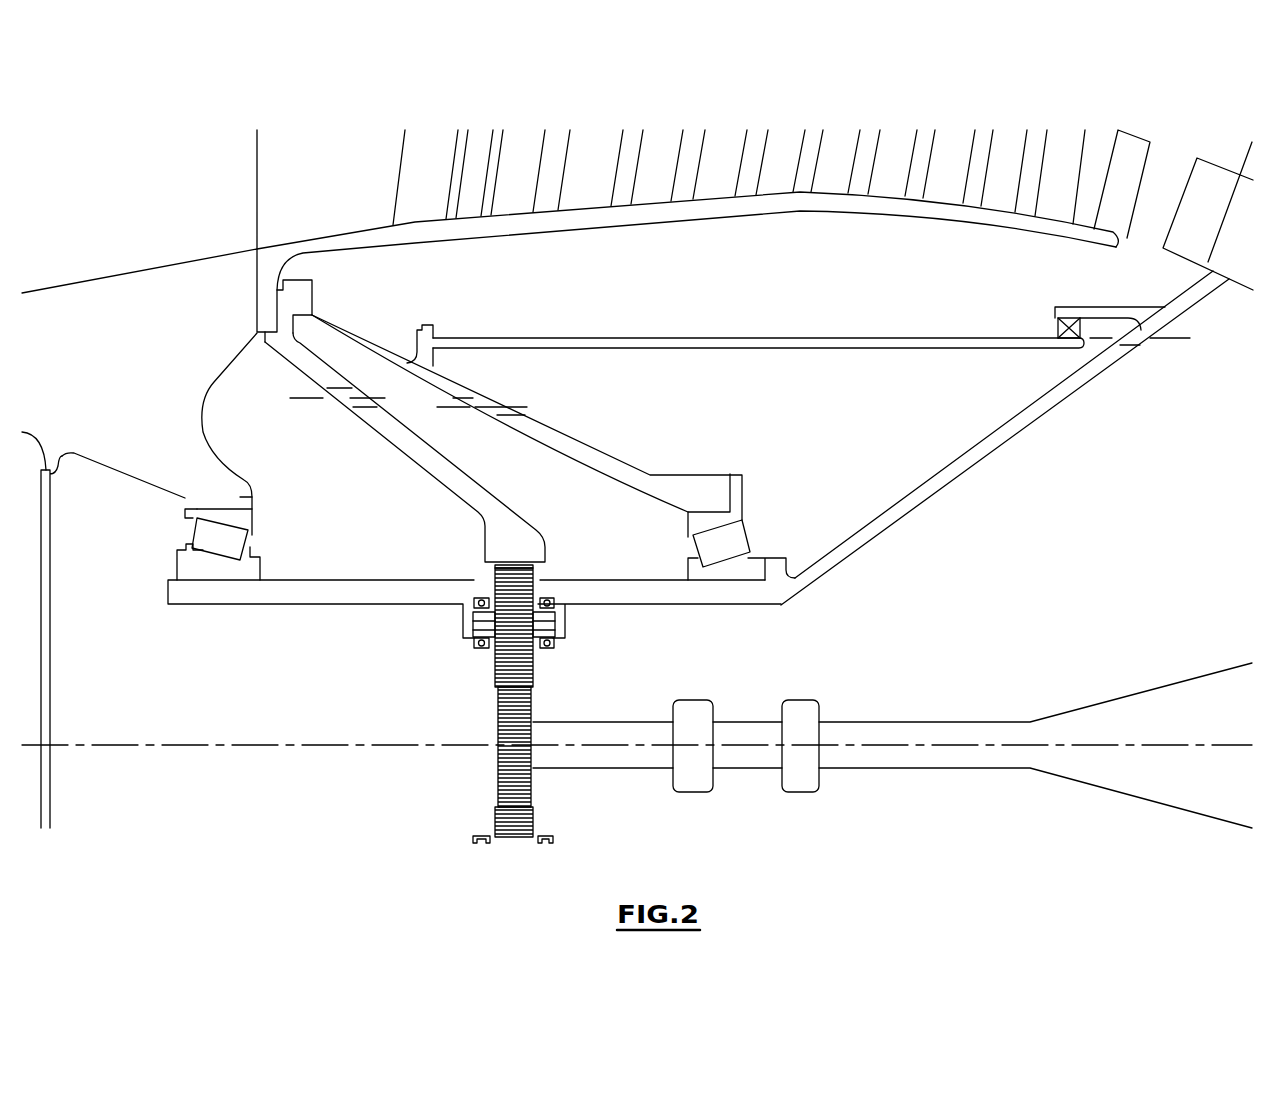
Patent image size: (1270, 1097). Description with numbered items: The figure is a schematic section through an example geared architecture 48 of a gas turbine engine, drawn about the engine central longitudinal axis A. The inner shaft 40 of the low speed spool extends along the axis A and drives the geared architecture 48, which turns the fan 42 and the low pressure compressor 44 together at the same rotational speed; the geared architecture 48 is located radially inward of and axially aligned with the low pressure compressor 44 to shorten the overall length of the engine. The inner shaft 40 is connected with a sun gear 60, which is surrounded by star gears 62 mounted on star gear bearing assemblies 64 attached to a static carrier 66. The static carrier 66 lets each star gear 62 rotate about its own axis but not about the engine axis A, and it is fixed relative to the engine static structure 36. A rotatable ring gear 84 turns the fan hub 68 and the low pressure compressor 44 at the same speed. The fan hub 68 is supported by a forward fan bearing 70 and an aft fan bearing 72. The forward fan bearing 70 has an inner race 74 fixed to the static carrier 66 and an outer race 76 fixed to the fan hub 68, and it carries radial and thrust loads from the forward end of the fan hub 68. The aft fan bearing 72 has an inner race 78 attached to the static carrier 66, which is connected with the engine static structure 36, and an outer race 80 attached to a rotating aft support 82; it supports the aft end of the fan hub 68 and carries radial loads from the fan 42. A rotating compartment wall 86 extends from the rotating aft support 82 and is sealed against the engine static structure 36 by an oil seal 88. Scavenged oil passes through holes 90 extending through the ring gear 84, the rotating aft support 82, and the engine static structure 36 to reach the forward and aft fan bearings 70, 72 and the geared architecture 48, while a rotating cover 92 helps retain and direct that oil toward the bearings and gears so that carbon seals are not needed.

The engine static structure 36 is at (995, 448).
The inner shaft 40 is at (907, 721).
The fan 42 is at (132, 189).
The low pressure compressor 44 is at (968, 108).
The geared architecture 48 is at (396, 806).
The sun gear 60 is at (497, 722).
The star gears 62 is at (536, 665).
The star gear bearing assemblies 64 is at (473, 650).
The static carrier 66 is at (386, 604).
The fan hub 68 is at (88, 310).
The forward fan bearing 70 is at (285, 528).
The aft fan bearing 72 is at (775, 516).
The inner race 74 is at (262, 577).
The outer race 76 is at (252, 497).
The inner race 78 is at (755, 553).
The outer race 80 is at (735, 503).
The rotating aft support 82 is at (596, 459).
The rotatable ring gear 84 is at (473, 497).
The rotating compartment wall 86 is at (705, 338).
The oil seal 88 is at (1055, 330).
The holes 90 is at (343, 404).
The rotating cover 92 is at (48, 692).
The engine central longitudinal axis A is at (103, 746).